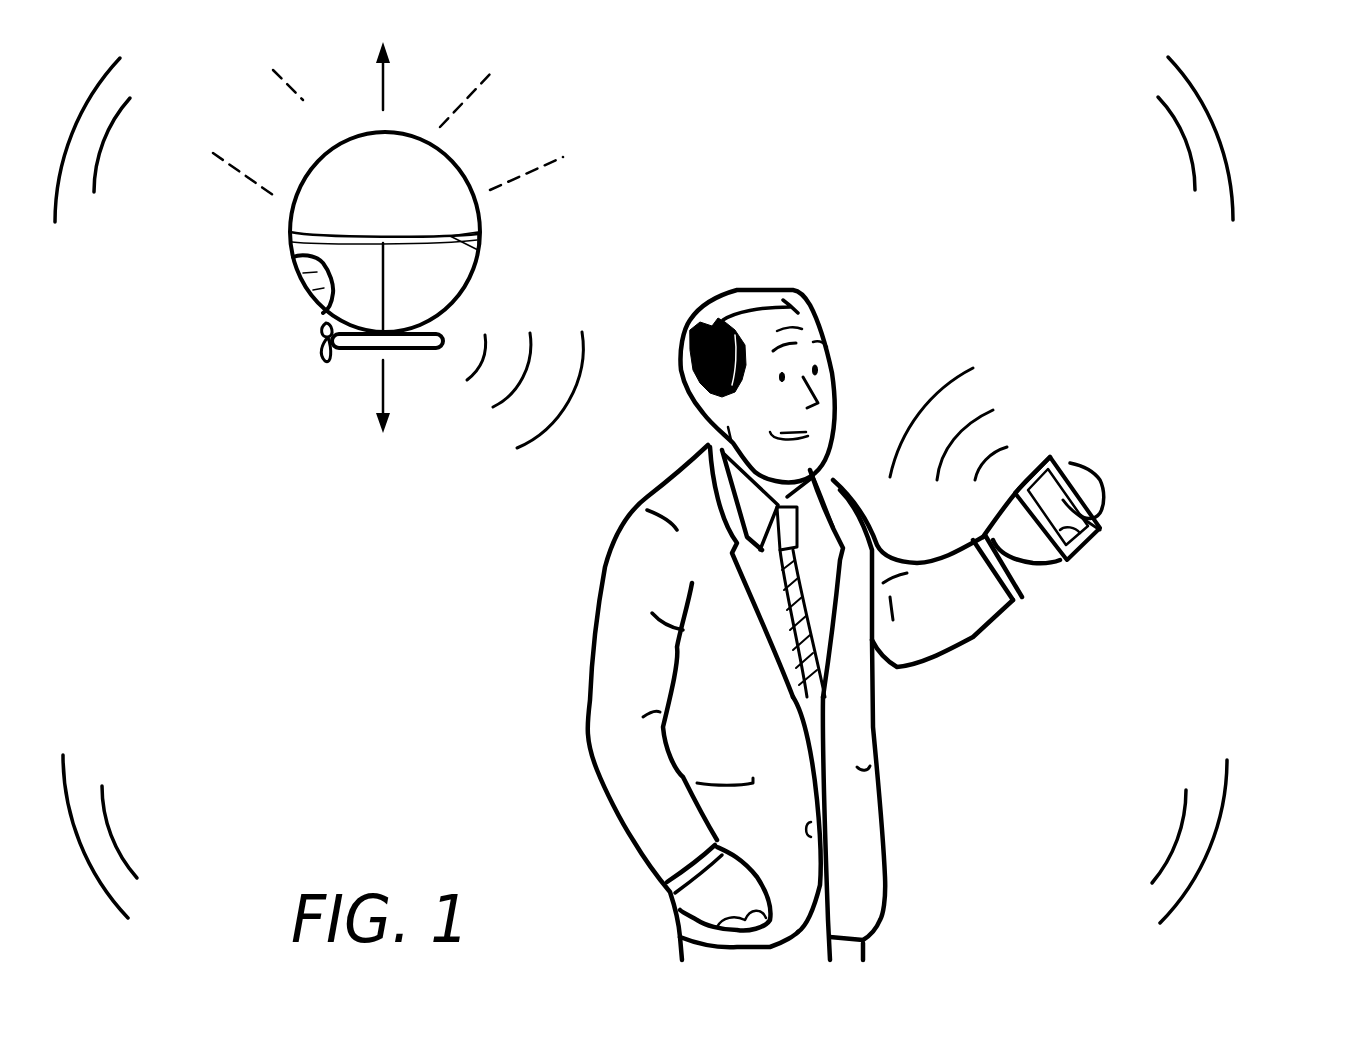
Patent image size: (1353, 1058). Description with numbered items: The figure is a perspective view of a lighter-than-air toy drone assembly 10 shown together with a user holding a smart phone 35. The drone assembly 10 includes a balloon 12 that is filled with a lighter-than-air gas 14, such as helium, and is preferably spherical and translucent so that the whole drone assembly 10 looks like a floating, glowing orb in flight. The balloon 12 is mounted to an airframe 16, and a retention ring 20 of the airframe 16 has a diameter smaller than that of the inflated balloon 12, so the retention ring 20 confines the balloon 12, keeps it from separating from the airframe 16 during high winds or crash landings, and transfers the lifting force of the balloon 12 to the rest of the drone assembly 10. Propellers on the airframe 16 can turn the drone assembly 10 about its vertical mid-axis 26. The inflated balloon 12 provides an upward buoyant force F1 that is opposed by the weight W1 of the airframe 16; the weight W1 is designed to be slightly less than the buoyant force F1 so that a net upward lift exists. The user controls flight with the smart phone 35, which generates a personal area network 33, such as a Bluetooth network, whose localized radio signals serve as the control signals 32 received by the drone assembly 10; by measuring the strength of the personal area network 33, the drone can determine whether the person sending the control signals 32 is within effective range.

The drone assembly 10 is at (285, 145).
The balloon 12 is at (440, 187).
The lighter-than-air gas 14 is at (303, 281).
The airframe 16 is at (410, 348).
The retention ring 20 is at (478, 248).
The vertical mid-axis 26 is at (383, 103).
The control signals 32 is at (935, 390).
The personal area network 33 is at (1135, 167).
The smart phone 35 is at (1050, 457).
The buoyant force F1 is at (385, 72).
The weight W1 is at (378, 420).